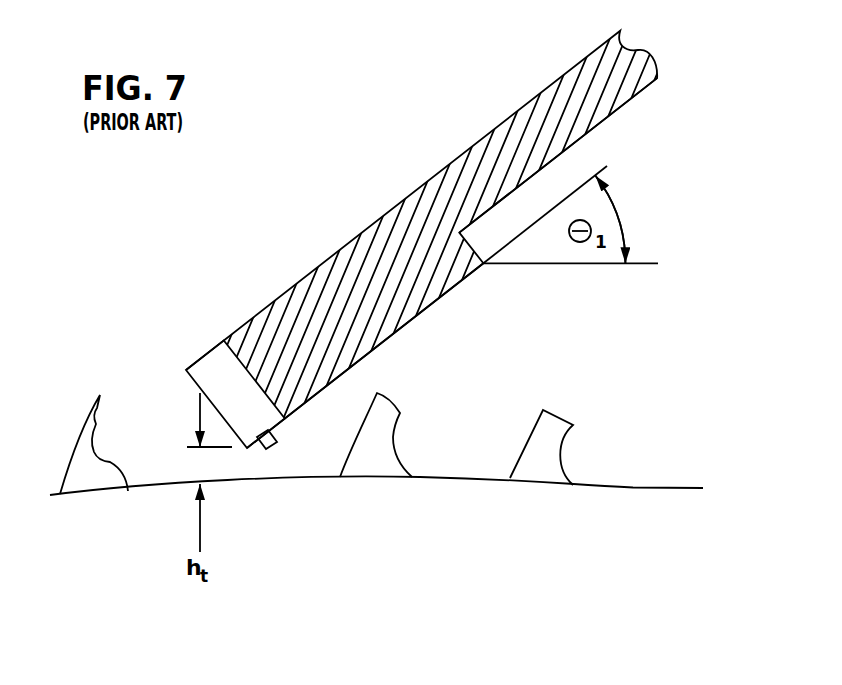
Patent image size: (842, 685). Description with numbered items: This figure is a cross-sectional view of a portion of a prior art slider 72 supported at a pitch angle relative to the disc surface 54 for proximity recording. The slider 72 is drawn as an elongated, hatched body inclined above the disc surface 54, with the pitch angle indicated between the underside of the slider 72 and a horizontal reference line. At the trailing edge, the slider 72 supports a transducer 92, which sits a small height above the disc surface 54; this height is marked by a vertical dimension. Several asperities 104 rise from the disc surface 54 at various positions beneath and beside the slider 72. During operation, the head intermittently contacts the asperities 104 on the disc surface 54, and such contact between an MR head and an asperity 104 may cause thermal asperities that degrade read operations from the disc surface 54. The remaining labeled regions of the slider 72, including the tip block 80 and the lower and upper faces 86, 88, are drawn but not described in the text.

The prior art slider 72 is at (410, 192).
The blade tip 80 is at (185, 371).
The lower blade surface 86 is at (440, 297).
The upper relief surface 88 is at (523, 189).
The transducer 92 is at (282, 445).
The disc surface 54 is at (633, 486).
The asperities 104 is at (82, 402).